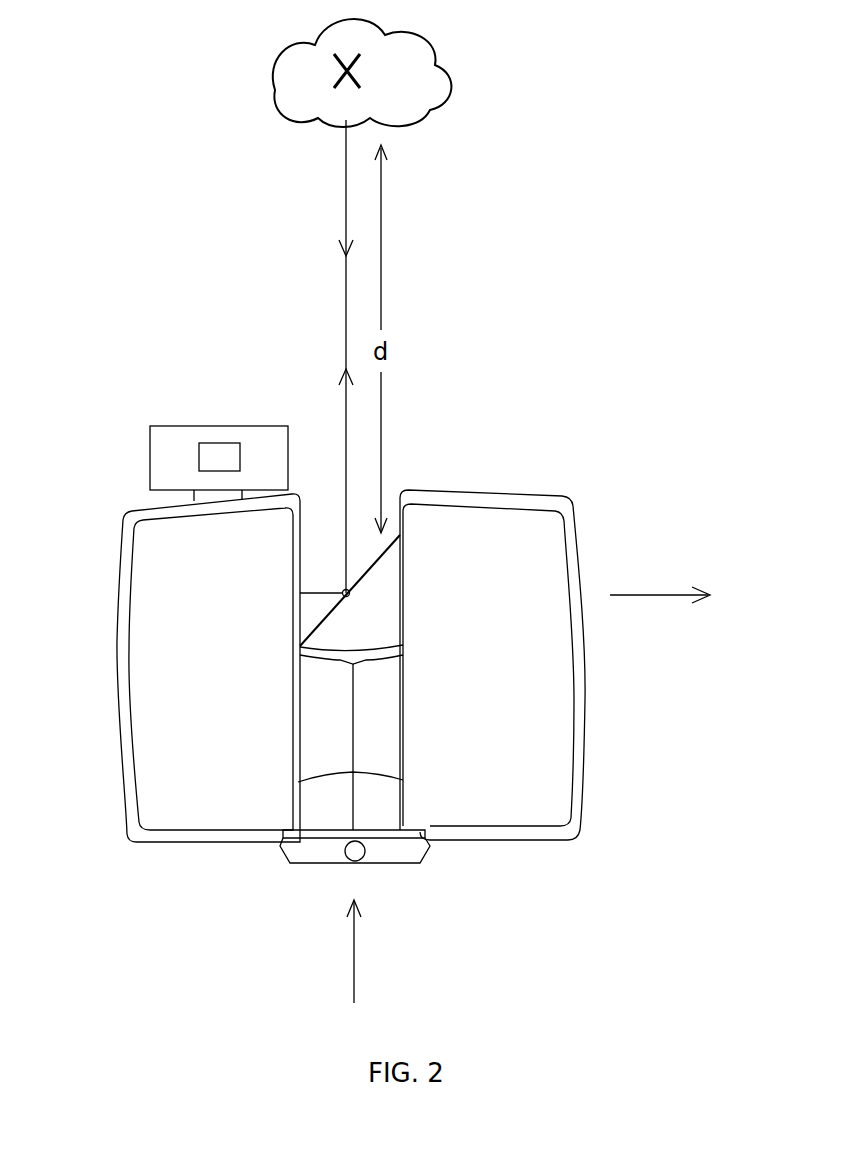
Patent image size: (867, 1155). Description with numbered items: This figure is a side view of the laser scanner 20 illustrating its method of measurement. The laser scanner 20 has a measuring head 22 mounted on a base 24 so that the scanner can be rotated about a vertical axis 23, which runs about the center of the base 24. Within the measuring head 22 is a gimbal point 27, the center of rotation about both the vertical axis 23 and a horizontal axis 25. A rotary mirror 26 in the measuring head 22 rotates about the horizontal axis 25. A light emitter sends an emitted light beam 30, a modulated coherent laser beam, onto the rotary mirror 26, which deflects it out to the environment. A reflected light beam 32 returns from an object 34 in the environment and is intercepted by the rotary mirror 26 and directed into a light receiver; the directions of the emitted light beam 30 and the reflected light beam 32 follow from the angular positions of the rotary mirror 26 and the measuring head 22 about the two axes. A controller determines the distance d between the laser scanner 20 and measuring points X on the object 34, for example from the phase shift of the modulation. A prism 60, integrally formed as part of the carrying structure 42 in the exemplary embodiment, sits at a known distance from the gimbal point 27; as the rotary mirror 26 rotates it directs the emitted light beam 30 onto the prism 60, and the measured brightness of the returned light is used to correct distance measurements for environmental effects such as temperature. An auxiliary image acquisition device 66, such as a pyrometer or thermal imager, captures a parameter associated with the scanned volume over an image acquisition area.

The laser scanner 20 is at (190, 185).
The measuring head 22 is at (565, 443).
The vertical axis 23 is at (356, 975).
The base 24 is at (288, 858).
The horizontal axis 25 is at (641, 594).
The rotary mirror 26 is at (323, 618).
The gimbal point 27 is at (349, 590).
The emitted light beam 30 is at (342, 398).
The reflected light beam 32 is at (342, 228).
The object 34 is at (430, 38).
The carrying structure 42 is at (441, 889).
The prism 60 is at (356, 668).
The auxiliary image acquisition device 66 is at (182, 390).